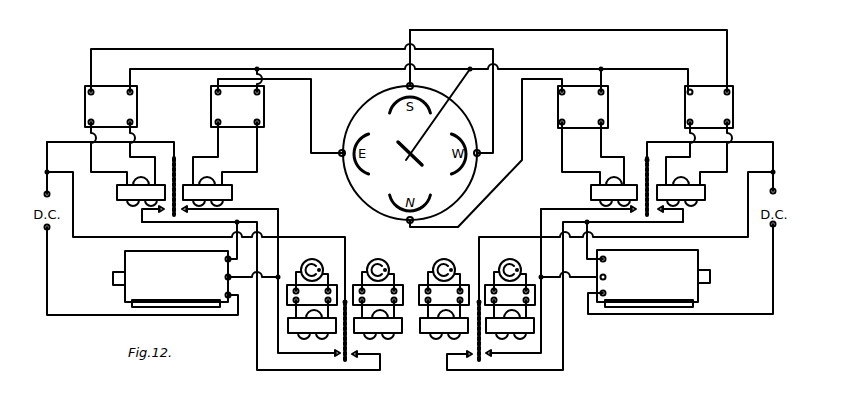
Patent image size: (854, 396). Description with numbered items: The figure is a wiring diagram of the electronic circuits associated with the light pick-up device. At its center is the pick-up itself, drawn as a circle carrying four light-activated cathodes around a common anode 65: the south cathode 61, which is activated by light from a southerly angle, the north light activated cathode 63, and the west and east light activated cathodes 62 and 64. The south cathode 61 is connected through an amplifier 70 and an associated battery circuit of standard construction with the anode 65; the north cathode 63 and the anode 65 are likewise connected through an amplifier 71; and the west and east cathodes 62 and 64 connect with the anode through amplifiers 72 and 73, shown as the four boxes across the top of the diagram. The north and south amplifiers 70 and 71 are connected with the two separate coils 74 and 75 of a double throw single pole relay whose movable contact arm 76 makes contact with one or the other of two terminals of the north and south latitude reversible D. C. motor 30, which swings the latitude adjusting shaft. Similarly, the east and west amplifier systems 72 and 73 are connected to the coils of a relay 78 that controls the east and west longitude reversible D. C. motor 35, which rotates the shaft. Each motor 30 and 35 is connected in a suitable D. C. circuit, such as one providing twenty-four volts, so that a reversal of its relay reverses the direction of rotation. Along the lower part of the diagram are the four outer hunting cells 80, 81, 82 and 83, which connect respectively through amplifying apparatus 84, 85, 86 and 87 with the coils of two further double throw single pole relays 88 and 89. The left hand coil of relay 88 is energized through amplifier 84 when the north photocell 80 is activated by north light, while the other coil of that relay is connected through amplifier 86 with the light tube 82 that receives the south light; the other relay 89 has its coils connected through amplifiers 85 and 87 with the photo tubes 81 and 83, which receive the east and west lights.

The amplifier 72 is at (111, 106).
The amplifier 73 is at (237, 106).
The amplifier 71 is at (583, 107).
The amplifier 70 is at (709, 107).
The relay 78 is at (233, 192).
The coil 75 is at (590, 188).
The coil 74 is at (706, 188).
The movable contact arm 76 is at (645, 172).
The south cathode 61 is at (388, 113).
The west light activated cathode 62 is at (450, 175).
The north light activated cathode 63 is at (388, 195).
The east light activated cathode 64 is at (369, 135).
The anode 65 is at (404, 160).
The longitude reversible D. C. motor 35 is at (172, 279).
The latitude reversible D. C. motor 30 is at (653, 278).
The photo tube 83 is at (304, 266).
The photo tube 81 is at (388, 267).
The north photocell 80 is at (454, 267).
The light tube 82 is at (520, 267).
The amplifying apparatus 87 is at (312, 312).
The amplifying apparatus 85 is at (378, 312).
The amplifying apparatus 84 is at (444, 312).
The amplifying apparatus 86 is at (510, 312).
The double throw single pole relay 89 is at (350, 345).
The double throw single pole relay 88 is at (474, 345).